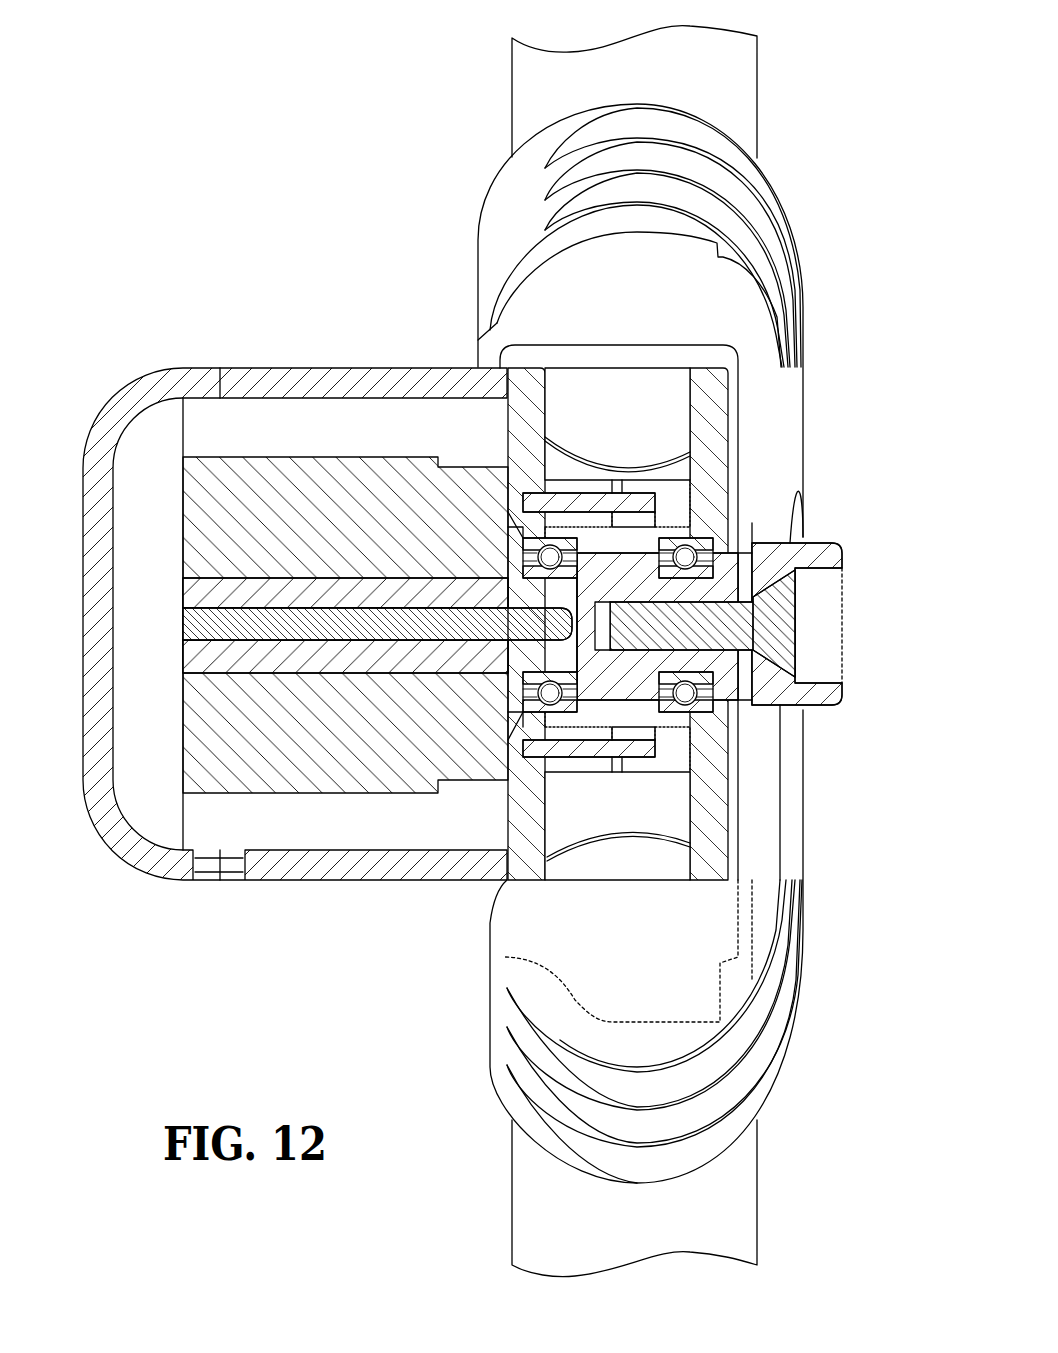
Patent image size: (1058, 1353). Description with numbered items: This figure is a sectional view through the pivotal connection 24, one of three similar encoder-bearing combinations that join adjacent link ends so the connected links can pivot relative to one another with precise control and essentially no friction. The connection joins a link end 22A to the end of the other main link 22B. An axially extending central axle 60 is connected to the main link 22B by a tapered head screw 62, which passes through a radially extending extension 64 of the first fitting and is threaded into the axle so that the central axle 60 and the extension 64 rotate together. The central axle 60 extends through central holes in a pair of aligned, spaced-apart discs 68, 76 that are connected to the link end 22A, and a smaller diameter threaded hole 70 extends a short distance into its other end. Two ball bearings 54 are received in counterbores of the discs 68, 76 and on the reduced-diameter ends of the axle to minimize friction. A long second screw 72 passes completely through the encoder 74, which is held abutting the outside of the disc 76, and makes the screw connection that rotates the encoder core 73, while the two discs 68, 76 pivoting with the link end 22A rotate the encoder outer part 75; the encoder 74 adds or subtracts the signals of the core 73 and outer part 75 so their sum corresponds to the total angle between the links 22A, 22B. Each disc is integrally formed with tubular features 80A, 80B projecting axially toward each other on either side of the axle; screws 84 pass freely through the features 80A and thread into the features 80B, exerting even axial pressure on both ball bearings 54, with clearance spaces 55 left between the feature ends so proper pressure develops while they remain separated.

The link end 22A is at (740, 84).
The main link 22B is at (722, 1207).
The pivotal connection 24 is at (369, 234).
The ball bearings 54 is at (550, 548).
The clearance spaces 55 is at (620, 485).
The central axle 60 is at (508, 553).
The tapered head screw 62 is at (790, 637).
The extension 64 is at (835, 565).
The disc 68 is at (718, 482).
The threaded hole 70 is at (490, 632).
The long second screw 72 is at (257, 606).
The encoder core 73 is at (215, 655).
The encoder 74 is at (268, 439).
The encoder outer part 75 is at (205, 478).
The disc 76 is at (505, 410).
The tubular features 80A is at (588, 480).
The tubular features 80B is at (655, 480).
The screws 84 is at (537, 503).